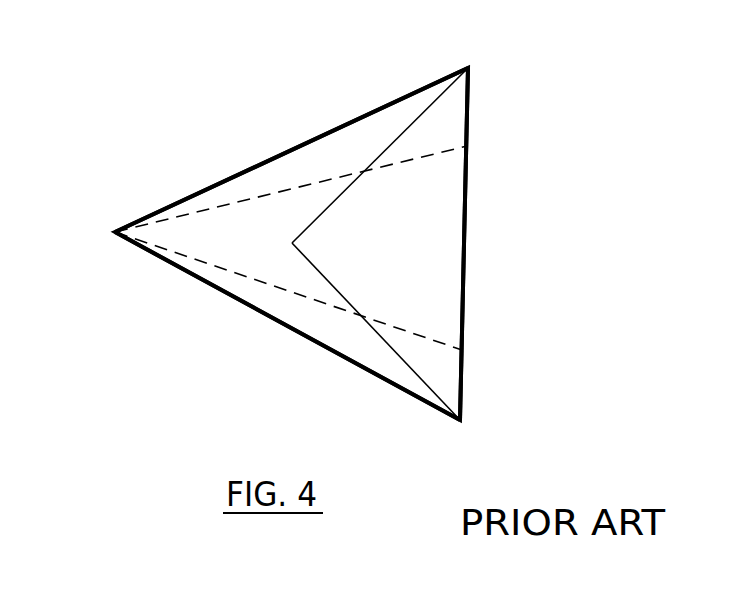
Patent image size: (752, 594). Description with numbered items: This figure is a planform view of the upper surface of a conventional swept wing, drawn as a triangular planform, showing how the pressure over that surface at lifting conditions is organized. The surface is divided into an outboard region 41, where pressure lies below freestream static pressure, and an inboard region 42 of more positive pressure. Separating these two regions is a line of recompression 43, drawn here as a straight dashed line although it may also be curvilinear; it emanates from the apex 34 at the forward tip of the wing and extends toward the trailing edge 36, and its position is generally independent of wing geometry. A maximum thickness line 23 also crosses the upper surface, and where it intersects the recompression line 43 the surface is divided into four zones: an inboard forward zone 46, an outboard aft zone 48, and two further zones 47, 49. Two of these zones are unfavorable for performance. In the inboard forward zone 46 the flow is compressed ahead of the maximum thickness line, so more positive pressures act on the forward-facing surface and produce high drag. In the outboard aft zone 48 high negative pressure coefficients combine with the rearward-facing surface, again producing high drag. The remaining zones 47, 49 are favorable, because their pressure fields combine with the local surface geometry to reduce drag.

The maximum thickness line 23 is at (380, 149).
The apex 34 is at (247, 244).
The trailing edge 36 is at (508, 248).
The outboard region 41 is at (291, 244).
The inboard region 42 is at (158, 298).
The line of recompression 43 is at (291, 254).
The inboard forward zone 46 is at (258, 242).
The favorable zone 47 is at (334, 168).
The outboard aft zone 48 is at (443, 142).
The favorable zone 49 is at (419, 285).